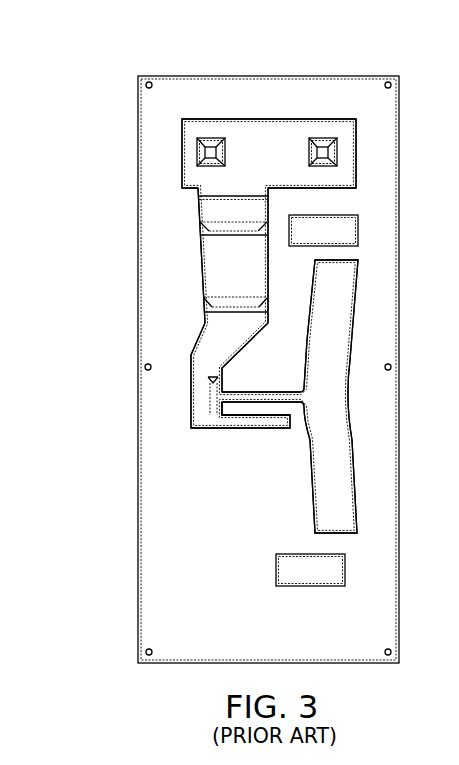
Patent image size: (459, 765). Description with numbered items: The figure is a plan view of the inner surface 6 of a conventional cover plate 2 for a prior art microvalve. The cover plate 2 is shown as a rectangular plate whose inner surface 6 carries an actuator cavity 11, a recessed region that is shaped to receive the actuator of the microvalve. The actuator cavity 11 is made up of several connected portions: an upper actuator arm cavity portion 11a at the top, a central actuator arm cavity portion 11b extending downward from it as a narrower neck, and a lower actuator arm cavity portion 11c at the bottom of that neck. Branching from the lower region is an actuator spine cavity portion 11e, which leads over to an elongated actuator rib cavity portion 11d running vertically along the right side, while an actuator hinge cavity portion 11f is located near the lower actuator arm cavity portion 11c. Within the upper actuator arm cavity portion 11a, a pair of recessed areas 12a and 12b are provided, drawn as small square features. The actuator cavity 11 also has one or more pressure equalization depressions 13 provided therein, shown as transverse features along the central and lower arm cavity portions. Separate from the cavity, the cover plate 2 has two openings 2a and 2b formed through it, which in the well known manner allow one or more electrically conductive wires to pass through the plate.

The cover plate 2 is at (185, 76).
The inner surface 6 is at (348, 92).
The actuator cavity 11 is at (254, 138).
The upper actuator arm cavity portion 11a is at (196, 178).
The central actuator arm cavity portion 11b is at (213, 275).
The lower actuator arm cavity portion 11c is at (203, 417).
The actuator rib cavity portion 11d is at (330, 313).
The actuator spine cavity portion 11e is at (283, 400).
The actuator hinge cavity portion 11f is at (253, 415).
The recessed area 12a is at (210, 152).
The recessed area 12b is at (325, 152).
The pressure equalization depression 13 is at (206, 224).
The opening 2a is at (325, 246).
The opening 2b is at (313, 585).